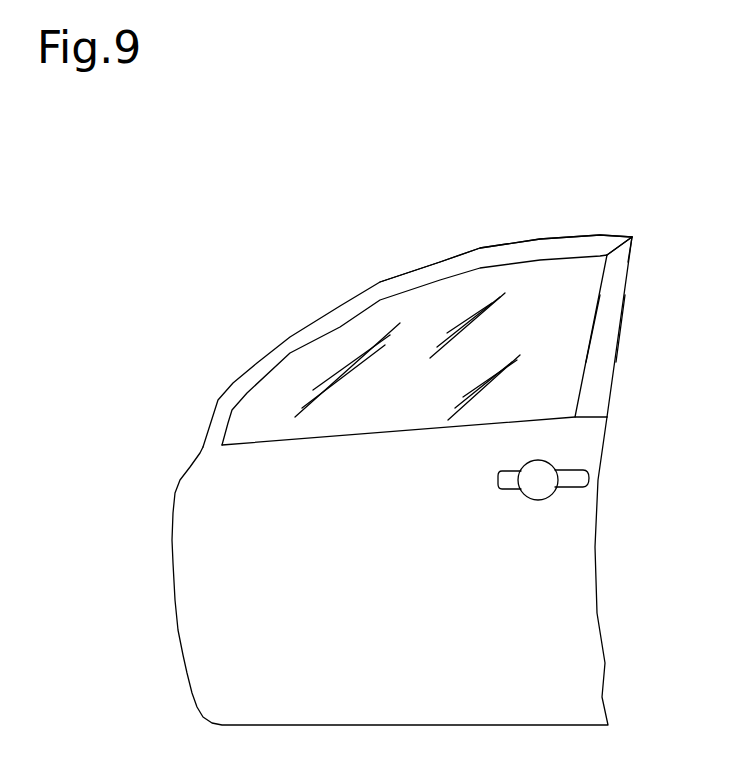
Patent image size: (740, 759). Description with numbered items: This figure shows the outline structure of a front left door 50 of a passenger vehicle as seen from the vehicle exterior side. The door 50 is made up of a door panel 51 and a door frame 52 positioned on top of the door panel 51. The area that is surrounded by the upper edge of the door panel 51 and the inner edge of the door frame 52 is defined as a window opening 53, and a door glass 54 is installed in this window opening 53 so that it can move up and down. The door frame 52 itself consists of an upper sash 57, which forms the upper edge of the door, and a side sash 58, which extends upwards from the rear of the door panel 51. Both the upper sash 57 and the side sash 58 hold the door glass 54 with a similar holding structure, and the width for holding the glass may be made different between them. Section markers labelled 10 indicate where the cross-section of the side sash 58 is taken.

The door 50 is at (262, 296).
The door panel 51 is at (185, 623).
The door frame 52 is at (639, 248).
The window opening 53 is at (340, 318).
The door glass 54 is at (413, 320).
The upper sash 57 is at (513, 248).
The side sash 58 is at (620, 273).
The glass run 10 is at (583, 362).